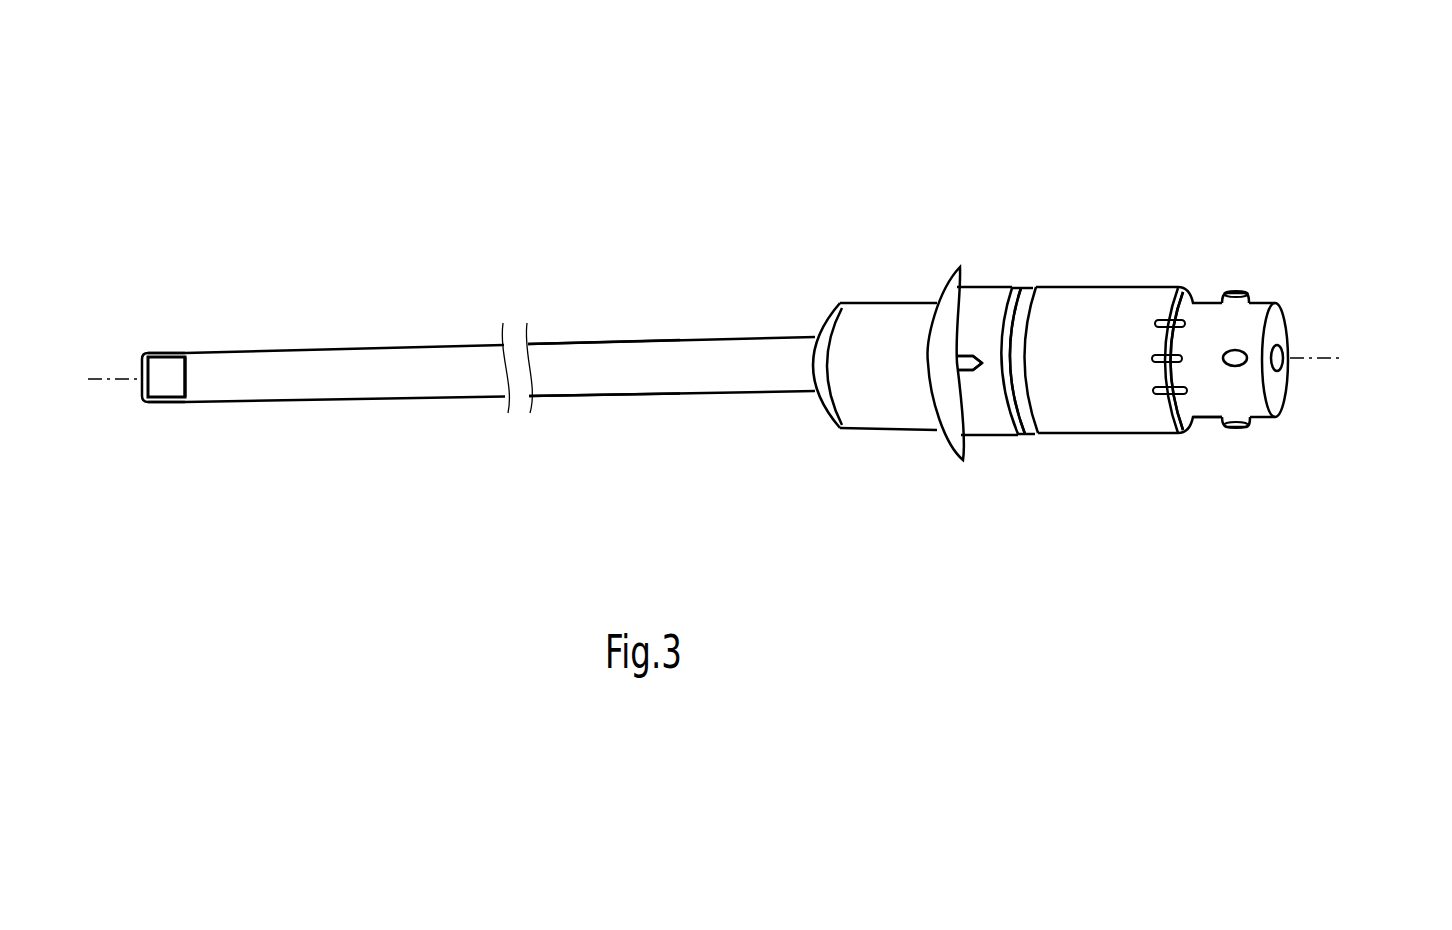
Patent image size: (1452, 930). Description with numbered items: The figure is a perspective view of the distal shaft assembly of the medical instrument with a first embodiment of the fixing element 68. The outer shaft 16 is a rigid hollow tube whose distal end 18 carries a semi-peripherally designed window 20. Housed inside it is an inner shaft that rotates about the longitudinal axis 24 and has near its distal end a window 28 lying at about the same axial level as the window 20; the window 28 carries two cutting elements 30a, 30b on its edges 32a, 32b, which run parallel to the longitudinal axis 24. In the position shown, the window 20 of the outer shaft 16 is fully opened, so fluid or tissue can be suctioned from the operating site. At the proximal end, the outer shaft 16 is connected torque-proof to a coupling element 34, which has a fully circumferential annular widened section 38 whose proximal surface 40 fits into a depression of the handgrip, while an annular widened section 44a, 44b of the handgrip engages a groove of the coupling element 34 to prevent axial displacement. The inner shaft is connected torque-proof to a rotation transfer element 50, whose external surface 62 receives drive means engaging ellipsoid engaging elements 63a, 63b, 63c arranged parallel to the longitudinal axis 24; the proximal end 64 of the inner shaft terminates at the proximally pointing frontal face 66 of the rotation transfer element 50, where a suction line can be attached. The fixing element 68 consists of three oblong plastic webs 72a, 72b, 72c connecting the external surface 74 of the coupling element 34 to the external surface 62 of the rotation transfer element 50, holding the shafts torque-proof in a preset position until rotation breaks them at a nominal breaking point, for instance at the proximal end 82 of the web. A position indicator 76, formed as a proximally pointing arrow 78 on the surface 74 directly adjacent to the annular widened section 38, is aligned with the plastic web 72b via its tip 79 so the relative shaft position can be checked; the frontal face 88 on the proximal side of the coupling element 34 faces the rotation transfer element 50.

The outer shaft 16 is at (568, 372).
The distal end of the outer shaft 18 is at (227, 390).
The window of the outer shaft 20 is at (160, 377).
The longitudinal axis 24 is at (101, 378).
The window of the inner shaft 28 is at (172, 372).
The cutting element 30a is at (155, 355).
The cutting element 30b is at (142, 402).
The edge of the window 32a is at (183, 355).
The edge of the window 32b is at (168, 398).
The coupling element 34 is at (880, 255).
The annular widened section 38 is at (950, 293).
The surface of the annular widened section 40 is at (970, 282).
The annular widened section of the handgrip 44a is at (1028, 290).
The annular widened section of the handgrip 44b is at (1030, 433).
The rotation transfer element 50 is at (1298, 354).
The external surface of the rotation transfer element 62 is at (1248, 405).
The engaging element 63a is at (1237, 293).
The engaging element 63b is at (1238, 360).
The engaging element 63c is at (1237, 430).
The proximal end of the inner shaft 64 is at (1283, 353).
The frontal face of the rotation transfer element 66 is at (1278, 395).
The fixing element 68 is at (1172, 395).
The oblong web 72a is at (1175, 290).
The oblong web 72b is at (1155, 322).
The oblong web 72c is at (1167, 397).
The external surface of the coupling element 74 is at (1090, 303).
The position indicator 76 is at (951, 378).
The arrow 78 is at (963, 367).
The tip of the arrow 79 is at (977, 372).
The proximal end of the plastic web 82 is at (1185, 350).
The frontal face of the coupling element 88 is at (1195, 422).